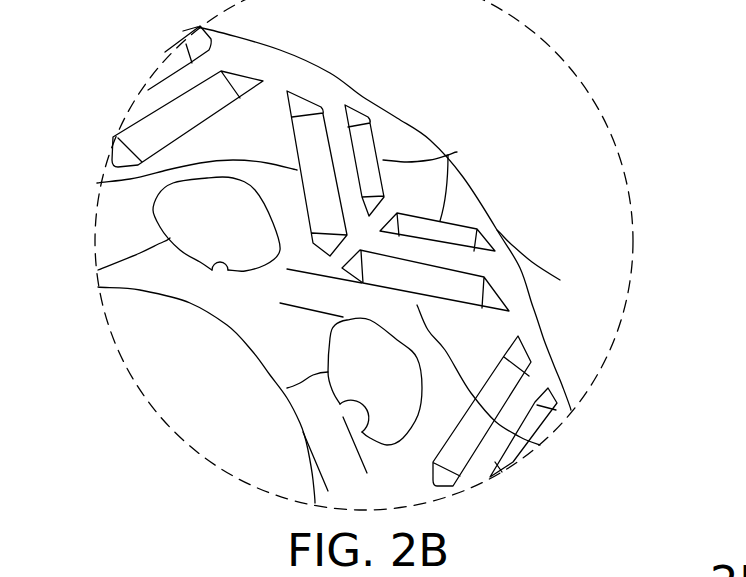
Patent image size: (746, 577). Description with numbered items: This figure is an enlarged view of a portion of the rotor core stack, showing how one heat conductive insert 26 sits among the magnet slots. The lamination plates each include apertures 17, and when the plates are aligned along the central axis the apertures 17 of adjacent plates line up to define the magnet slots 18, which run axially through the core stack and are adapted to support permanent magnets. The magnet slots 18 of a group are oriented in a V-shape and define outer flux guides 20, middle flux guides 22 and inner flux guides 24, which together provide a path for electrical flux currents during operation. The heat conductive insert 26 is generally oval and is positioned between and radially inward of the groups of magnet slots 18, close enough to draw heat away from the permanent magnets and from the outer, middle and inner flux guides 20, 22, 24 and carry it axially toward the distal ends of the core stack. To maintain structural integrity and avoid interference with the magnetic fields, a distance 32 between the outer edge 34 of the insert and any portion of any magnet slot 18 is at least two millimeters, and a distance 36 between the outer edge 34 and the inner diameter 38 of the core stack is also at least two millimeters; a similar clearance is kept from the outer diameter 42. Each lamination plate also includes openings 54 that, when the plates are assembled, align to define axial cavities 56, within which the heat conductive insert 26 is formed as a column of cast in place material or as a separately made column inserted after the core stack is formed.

The apertures 17 is at (366, 245).
The magnet slots 18 is at (353, 110).
The outer flux guides 20 is at (457, 152).
The middle flux guides 22 is at (343, 157).
The inner flux guides 24 is at (97, 183).
The heat conductive insert 26 is at (231, 234).
The distance 32 is at (302, 240).
The outer edge 34 is at (98, 270).
The distance 36 is at (383, 462).
The inner diameter 38 is at (248, 350).
The outer diameter 42 is at (371, 103).
The openings 54 is at (248, 350).
The axial cavities 56 is at (212, 272).